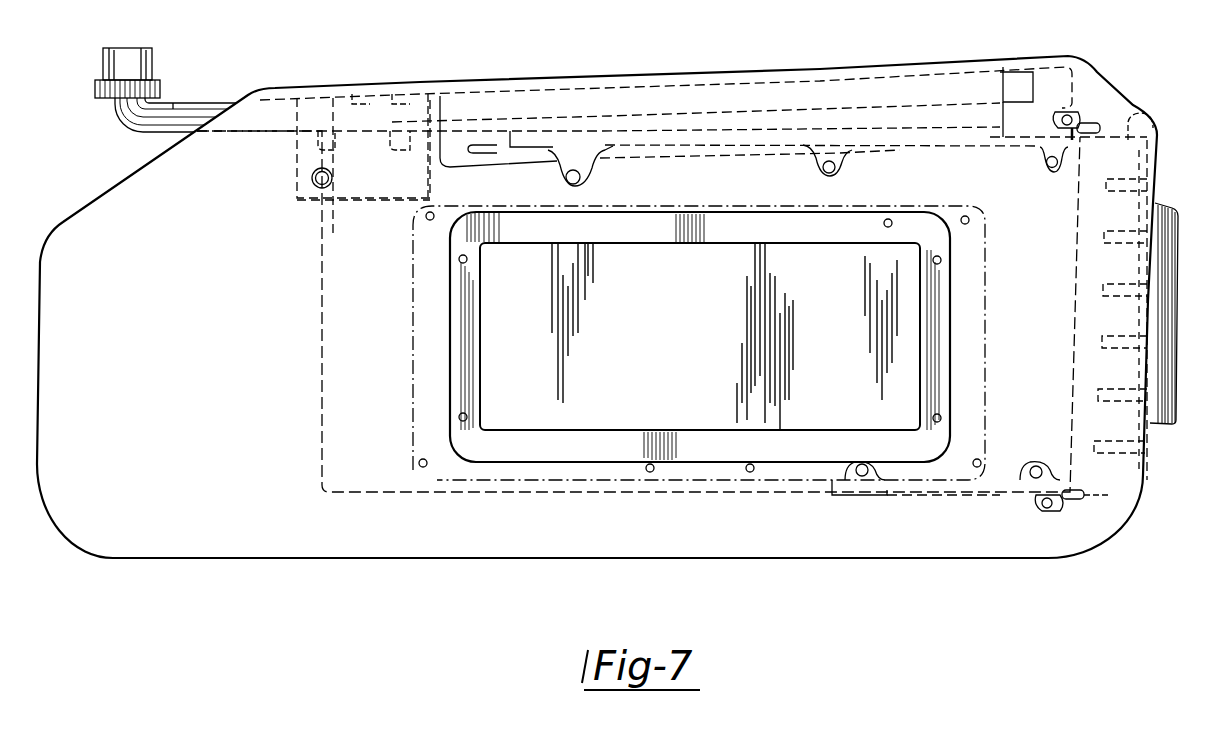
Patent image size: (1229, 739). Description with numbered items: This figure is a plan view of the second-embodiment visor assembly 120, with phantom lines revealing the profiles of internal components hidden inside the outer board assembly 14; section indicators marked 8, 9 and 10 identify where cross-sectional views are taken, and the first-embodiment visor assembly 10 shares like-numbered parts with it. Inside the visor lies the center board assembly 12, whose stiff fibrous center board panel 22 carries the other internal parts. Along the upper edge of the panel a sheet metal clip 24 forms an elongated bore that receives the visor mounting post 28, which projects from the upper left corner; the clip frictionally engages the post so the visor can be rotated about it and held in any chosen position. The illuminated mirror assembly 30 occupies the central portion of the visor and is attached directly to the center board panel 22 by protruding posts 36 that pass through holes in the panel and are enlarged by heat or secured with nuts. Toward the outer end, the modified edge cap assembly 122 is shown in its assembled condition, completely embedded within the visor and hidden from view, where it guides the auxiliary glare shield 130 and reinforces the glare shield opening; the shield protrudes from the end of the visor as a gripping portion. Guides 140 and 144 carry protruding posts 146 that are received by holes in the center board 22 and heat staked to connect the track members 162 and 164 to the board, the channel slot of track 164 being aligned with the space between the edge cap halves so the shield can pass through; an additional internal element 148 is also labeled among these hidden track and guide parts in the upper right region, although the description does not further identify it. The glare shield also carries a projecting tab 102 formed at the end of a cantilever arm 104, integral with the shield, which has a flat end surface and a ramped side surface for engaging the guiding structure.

The center board assembly 12 is at (455, 491).
The outer board assembly 14 is at (213, 557).
The center board panel 22 is at (368, 496).
The sheet metal clip 24 is at (353, 82).
The visor mounting post 28 is at (185, 104).
The mirror assembly 30 is at (563, 462).
The protruding post 36 is at (412, 240).
The projecting tab 102 is at (558, 105).
The cantilever arm 104 is at (533, 135).
The visor assembly 120 is at (740, 57).
The edge cap assembly 122 is at (1146, 490).
The auxiliary glare shield 130 is at (1165, 203).
The guide 140 is at (643, 131).
The guide 144 is at (858, 500).
The protruding post 146 is at (843, 162).
The member 148 is at (808, 122).
The track member 162 is at (892, 147).
The track 164 is at (880, 500).
The section line 8 is at (1073, 365).
The section line 9 is at (1052, 436).
The visor assembly 10 is at (1059, 308).